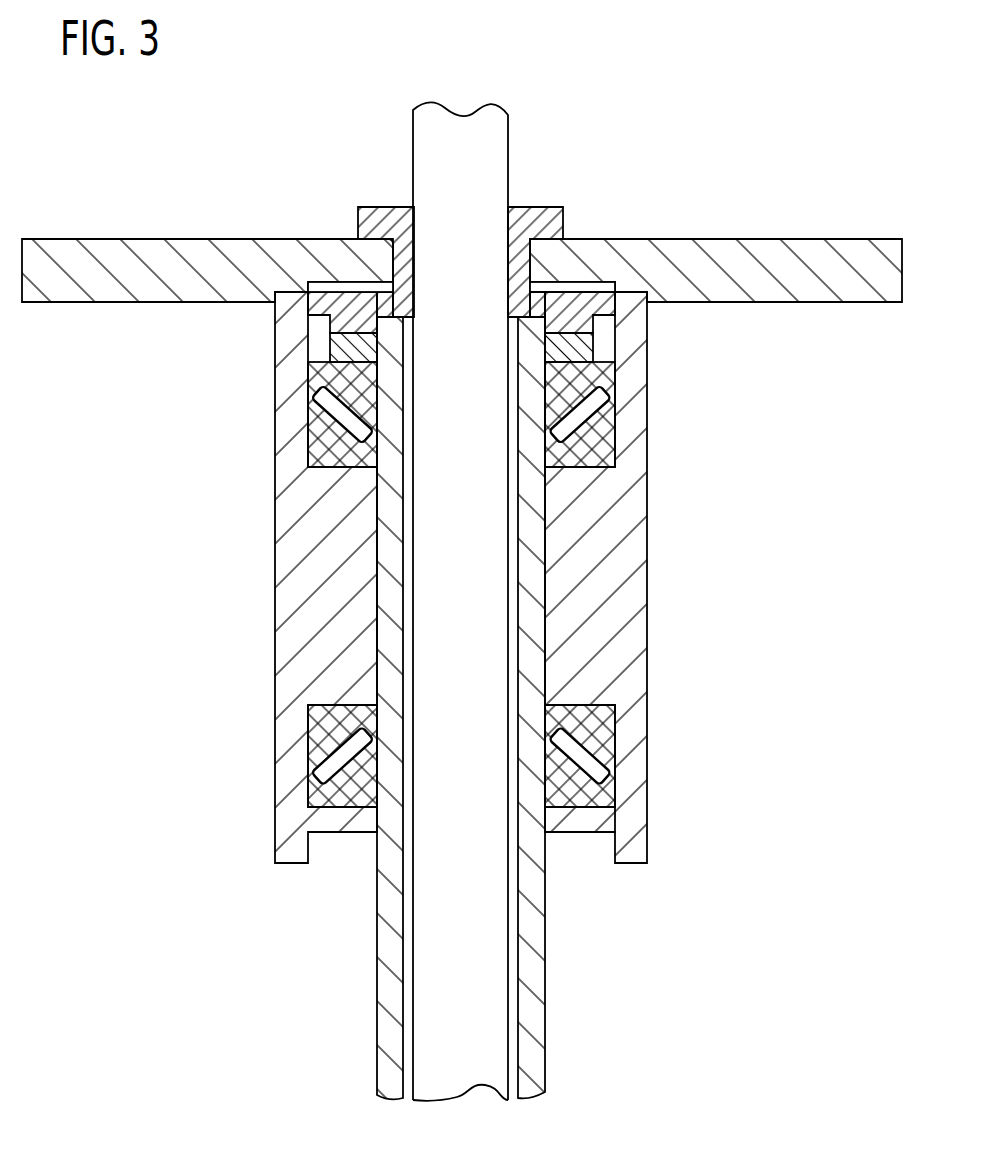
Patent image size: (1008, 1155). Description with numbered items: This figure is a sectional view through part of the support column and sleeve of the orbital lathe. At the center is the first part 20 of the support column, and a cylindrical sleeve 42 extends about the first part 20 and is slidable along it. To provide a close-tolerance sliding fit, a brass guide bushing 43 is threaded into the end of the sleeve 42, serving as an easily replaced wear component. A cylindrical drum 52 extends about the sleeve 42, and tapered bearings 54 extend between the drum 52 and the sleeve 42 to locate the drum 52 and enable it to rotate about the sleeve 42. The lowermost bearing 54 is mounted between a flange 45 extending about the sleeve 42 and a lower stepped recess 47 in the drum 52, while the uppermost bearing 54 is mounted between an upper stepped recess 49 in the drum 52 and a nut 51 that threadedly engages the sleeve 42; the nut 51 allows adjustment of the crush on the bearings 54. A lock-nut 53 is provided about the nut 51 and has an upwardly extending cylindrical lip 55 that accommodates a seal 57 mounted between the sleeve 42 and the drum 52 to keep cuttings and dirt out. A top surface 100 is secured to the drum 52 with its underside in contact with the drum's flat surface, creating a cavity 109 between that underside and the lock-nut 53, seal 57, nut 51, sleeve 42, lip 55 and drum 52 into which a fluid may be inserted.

The first part 20 is at (510, 142).
The cylindrical sleeve 42 is at (545, 982).
The guide bushing 43 is at (542, 218).
The flange 45 is at (590, 820).
The lower stepped recess 47 is at (608, 698).
The upper stepped recess 49 is at (325, 445).
The nut 51 is at (347, 350).
The cylindrical drum 52 is at (613, 565).
The lock-nut 53 is at (577, 325).
The tapered bearings 54 is at (597, 452).
The upwardly extending cylindrical lip 55 is at (385, 300).
The seal 57 is at (325, 303).
The top surface 100 is at (152, 238).
The cavity 109 is at (582, 287).